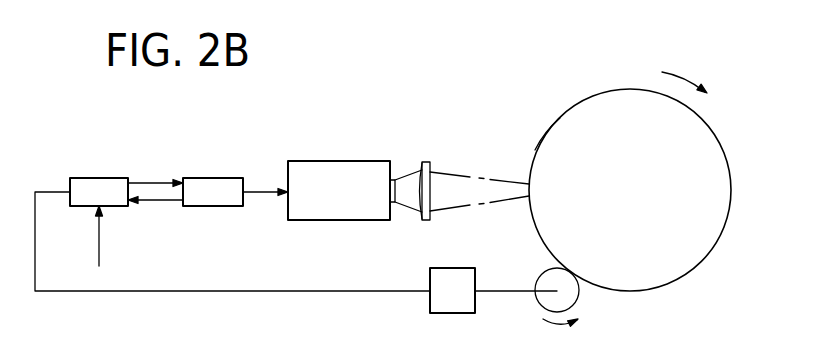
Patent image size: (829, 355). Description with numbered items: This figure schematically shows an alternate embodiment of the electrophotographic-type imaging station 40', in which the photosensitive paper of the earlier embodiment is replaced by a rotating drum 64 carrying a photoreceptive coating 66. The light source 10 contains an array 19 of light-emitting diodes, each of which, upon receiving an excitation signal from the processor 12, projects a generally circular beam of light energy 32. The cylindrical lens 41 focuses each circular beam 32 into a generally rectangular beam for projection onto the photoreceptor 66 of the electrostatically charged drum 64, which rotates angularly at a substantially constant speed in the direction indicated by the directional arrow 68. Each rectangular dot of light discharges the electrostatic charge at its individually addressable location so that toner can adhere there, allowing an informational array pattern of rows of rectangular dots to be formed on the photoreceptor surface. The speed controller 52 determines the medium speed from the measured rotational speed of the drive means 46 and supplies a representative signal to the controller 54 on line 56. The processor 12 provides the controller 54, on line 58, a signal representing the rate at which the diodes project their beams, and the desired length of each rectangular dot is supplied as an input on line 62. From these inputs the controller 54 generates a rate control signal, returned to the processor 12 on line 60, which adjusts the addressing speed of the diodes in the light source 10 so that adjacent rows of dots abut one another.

The electrophotographic-type imaging station 40' is at (376, 94).
The light source 10 is at (318, 161).
The processor 12 is at (209, 178).
The array 19 is at (398, 202).
The beam of light energy 32 is at (408, 172).
The cylindrical lens 41 is at (431, 188).
The paper drive means 46 is at (547, 268).
The speed controller 52 is at (430, 314).
The controller 54 is at (84, 178).
The line 56 is at (291, 291).
The line 58 is at (172, 201).
The line 60 is at (140, 182).
The line 62 is at (99, 248).
The rotating drum 64 is at (600, 105).
The photoreceptive coating 66 is at (551, 125).
The directional arrow 68 is at (676, 78).